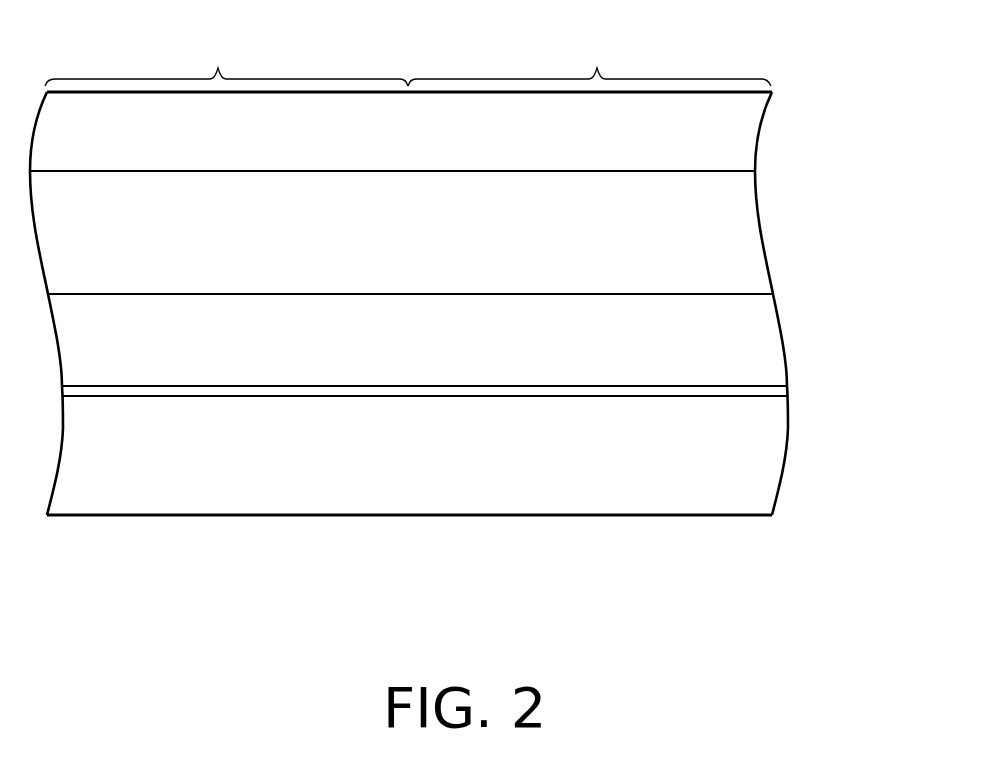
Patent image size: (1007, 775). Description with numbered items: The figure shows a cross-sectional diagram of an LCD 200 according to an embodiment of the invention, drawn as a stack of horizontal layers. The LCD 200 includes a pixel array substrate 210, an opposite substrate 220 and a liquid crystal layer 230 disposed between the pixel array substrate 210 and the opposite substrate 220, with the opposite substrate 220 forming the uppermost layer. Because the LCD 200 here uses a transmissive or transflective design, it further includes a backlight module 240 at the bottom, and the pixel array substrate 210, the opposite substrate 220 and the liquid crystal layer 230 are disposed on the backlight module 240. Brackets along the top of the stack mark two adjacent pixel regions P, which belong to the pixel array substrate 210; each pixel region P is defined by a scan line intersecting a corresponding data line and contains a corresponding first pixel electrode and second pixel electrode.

The LCD 200 is at (950, 558).
The pixel array substrate 210 is at (733, 344).
The opposite substrate 220 is at (733, 132).
The liquid crystal layer 230 is at (733, 236).
The backlight module 240 is at (733, 451).
The pixel region P is at (408, 55).